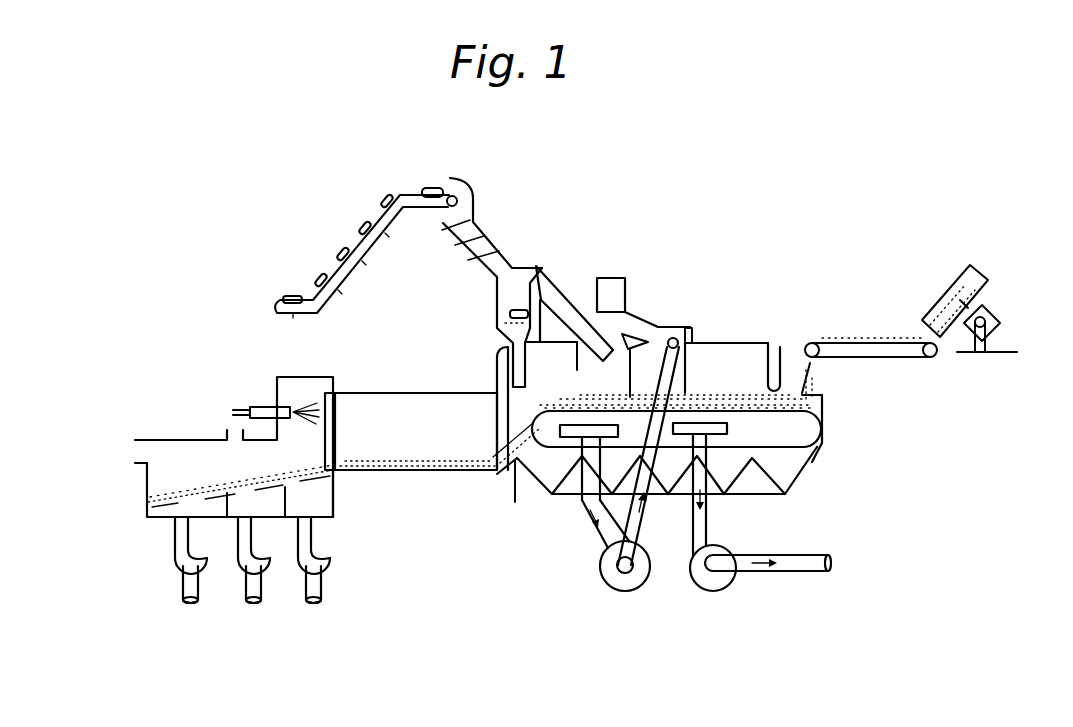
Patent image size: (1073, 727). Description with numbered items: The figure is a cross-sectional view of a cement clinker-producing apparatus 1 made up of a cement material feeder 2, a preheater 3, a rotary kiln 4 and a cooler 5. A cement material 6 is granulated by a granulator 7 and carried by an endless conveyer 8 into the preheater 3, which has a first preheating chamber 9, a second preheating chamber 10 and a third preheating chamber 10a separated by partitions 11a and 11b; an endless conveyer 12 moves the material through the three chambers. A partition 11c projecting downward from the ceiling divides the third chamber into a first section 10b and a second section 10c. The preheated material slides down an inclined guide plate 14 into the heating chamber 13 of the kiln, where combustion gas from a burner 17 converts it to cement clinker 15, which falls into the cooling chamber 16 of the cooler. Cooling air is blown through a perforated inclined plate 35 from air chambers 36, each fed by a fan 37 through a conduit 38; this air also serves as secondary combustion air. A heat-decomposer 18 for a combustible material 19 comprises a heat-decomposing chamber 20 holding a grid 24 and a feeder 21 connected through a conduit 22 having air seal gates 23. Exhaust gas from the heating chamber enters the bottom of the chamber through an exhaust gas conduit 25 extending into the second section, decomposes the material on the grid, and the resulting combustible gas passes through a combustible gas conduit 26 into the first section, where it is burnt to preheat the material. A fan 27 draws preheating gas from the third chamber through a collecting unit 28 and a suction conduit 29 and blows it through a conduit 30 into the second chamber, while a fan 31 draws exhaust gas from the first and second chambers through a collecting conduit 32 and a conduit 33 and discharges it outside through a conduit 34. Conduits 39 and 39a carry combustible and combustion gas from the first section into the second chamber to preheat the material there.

The cement clinker-producing apparatus 1 is at (678, 132).
The cement material feeder 2 is at (893, 228).
The preheater 3 is at (692, 273).
The rotary kiln 4 is at (408, 531).
The cooler 5 is at (192, 402).
The cement material 6 is at (988, 281).
The granulator 7 is at (950, 305).
The endless conveyer 8 is at (833, 340).
The first preheating chamber 9 is at (750, 348).
The second preheating chamber 10 is at (715, 345).
The third preheating chamber 10a is at (540, 393).
The first section 10b is at (665, 338).
The second section 10c is at (607, 322).
The partition 11a is at (778, 340).
The partition 11b is at (690, 334).
The partition 11c is at (610, 346).
The endless conveyer 12 is at (812, 462).
The heating chamber 13 is at (410, 435).
The inclined guide plate 14 is at (530, 497).
The cement clinker 15 is at (354, 472).
The cooling chamber 16 is at (172, 447).
The burner 17 is at (261, 408).
The heat-decomposer 18 is at (457, 298).
The combustible material 19 is at (432, 188).
The heat-decomposing chamber 20 is at (513, 277).
The feeder 21 is at (360, 237).
The conduit 22 is at (478, 228).
The air seal gate 23 is at (485, 230).
The grid 24 is at (540, 278).
The exhaust gas conduit 25 is at (509, 362).
The combustible gas conduit 26 is at (573, 340).
The fan 27 is at (650, 578).
The collecting unit 28 is at (562, 440).
The suction conduit 29 is at (593, 538).
The conduit 30 is at (643, 512).
The fan 31 is at (737, 580).
The collecting conduit 32 is at (730, 445).
The conduit 33 is at (707, 517).
The conduit 34 is at (802, 571).
The inclined plate 35 is at (170, 501).
The air chamber 36 is at (245, 503).
The fan 37 is at (246, 577).
The conduit 38 is at (253, 541).
The conduit 39 is at (647, 345).
The conduit 39a is at (665, 330).